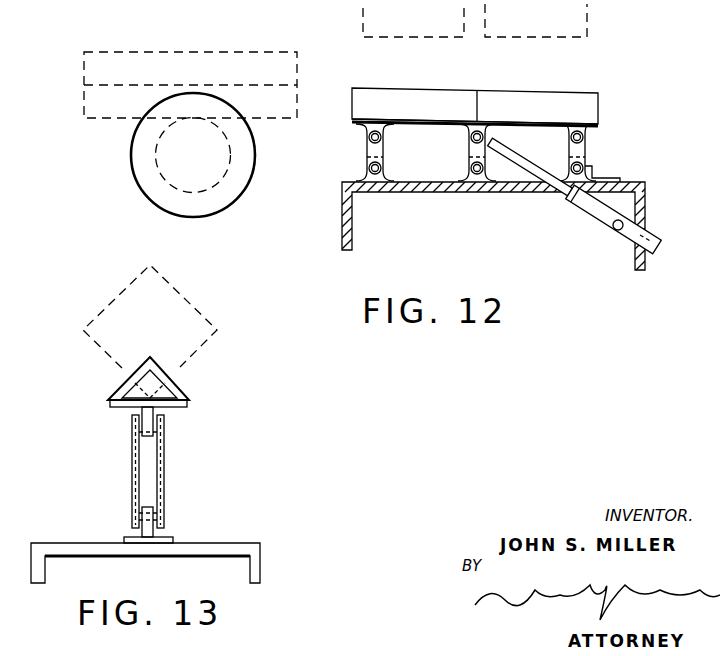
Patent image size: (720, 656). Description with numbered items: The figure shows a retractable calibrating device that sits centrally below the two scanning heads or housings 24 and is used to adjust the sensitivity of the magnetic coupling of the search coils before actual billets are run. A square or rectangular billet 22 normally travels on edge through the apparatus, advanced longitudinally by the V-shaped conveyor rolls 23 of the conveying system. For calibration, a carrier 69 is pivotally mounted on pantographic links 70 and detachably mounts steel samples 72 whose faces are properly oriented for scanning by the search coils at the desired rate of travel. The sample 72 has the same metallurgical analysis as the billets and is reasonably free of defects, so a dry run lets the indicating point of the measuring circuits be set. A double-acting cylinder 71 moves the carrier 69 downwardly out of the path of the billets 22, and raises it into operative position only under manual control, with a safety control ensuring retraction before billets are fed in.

In FIG. 12, the billet 22 is at (84, 66).
In FIG. 13, the billet 22 is at (105, 355).
In FIG. 12, the V-shaped conveyor rolls 23 is at (150, 173).
In FIG. 12, the inverted T-shaped carrier 24 is at (428, 28).
In FIG. 12, the carrier 69 is at (598, 125).
In FIG. 13, the carrier 69 is at (165, 405).
In FIG. 12, the pantographic links 70 is at (365, 140).
In FIG. 13, the pantographic links 70 is at (133, 478).
In FIG. 12, the double-acting cylinder 71 is at (600, 212).
In FIG. 12, the steel sample 72 is at (580, 103).
In FIG. 13, the steel sample 72 is at (180, 389).